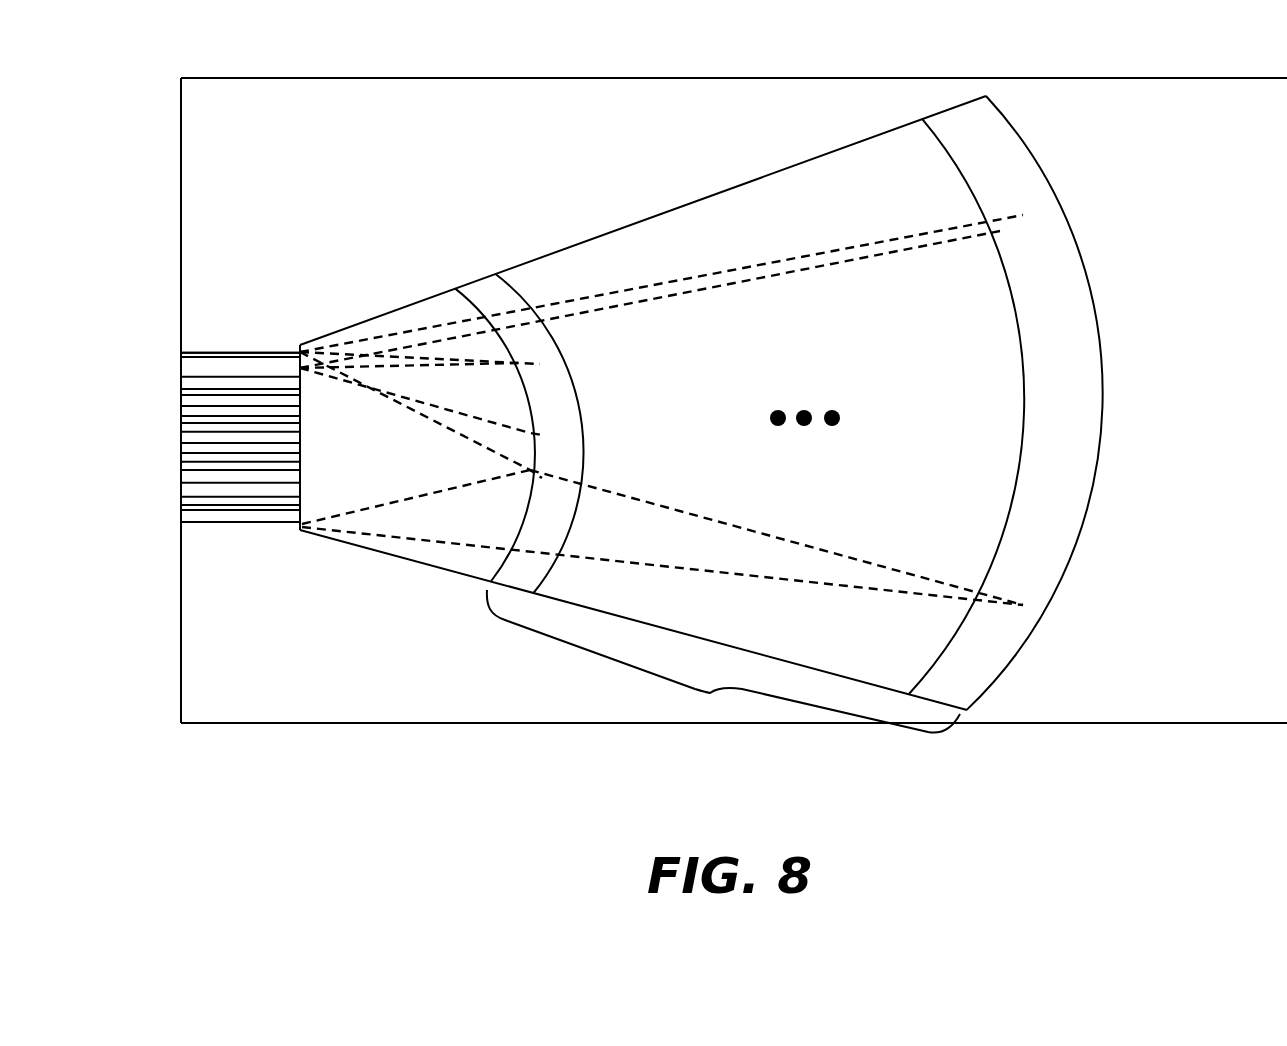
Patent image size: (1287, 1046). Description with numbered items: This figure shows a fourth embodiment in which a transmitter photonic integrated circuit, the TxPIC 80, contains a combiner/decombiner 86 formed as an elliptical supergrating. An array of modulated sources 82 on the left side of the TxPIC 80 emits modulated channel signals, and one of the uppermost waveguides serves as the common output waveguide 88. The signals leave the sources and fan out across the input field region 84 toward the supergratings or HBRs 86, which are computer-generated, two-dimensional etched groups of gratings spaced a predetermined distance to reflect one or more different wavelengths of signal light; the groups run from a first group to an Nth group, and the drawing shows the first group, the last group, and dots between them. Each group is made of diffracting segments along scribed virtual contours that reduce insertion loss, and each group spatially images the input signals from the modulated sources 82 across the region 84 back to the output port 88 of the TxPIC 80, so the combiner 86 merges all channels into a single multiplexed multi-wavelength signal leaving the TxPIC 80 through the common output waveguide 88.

The TxPIC 80 is at (329, 128).
The modulated sources 82 is at (173, 373).
The free space region 84 is at (415, 471).
The combiner/decombiner 86 is at (710, 693).
The common output waveguide 88 is at (218, 351).